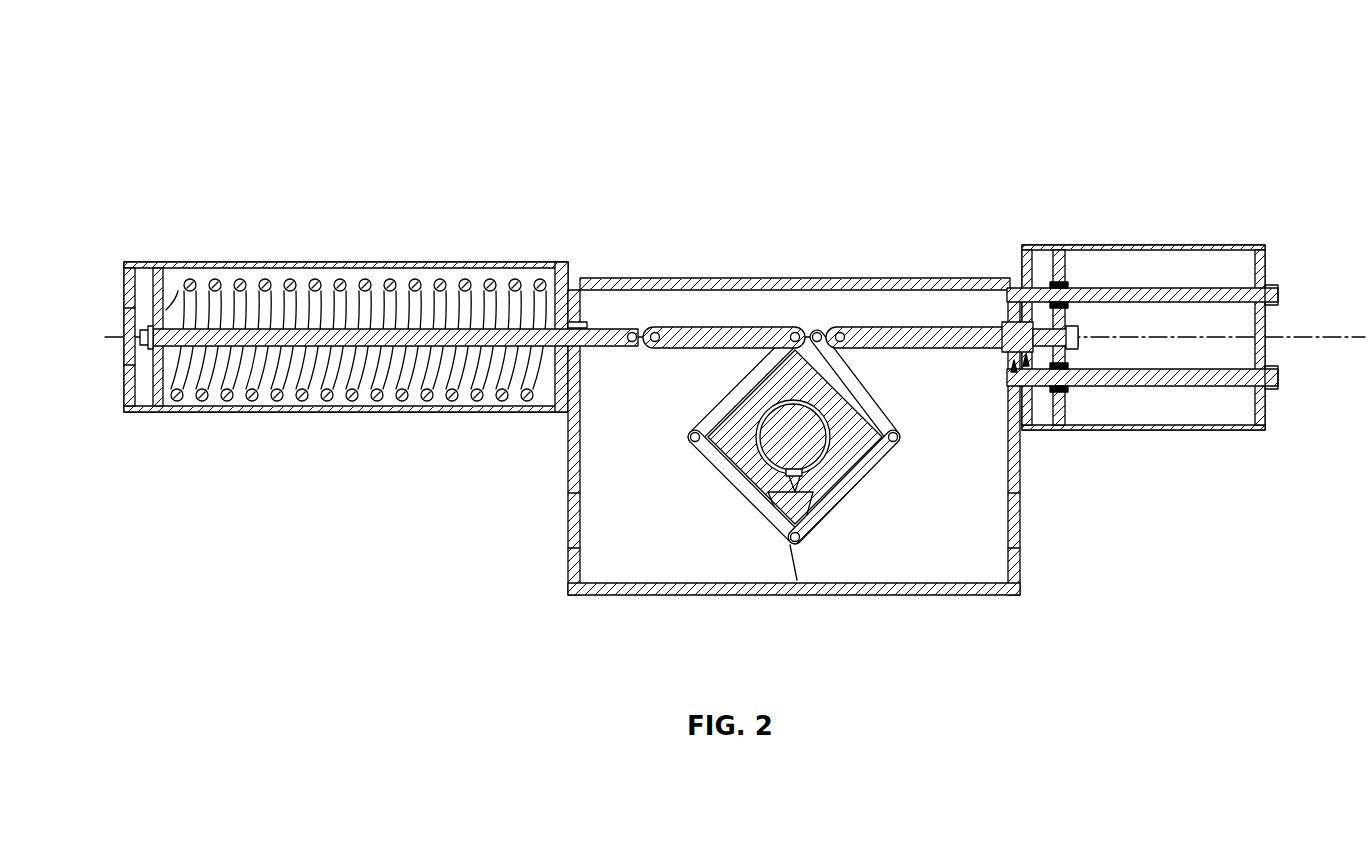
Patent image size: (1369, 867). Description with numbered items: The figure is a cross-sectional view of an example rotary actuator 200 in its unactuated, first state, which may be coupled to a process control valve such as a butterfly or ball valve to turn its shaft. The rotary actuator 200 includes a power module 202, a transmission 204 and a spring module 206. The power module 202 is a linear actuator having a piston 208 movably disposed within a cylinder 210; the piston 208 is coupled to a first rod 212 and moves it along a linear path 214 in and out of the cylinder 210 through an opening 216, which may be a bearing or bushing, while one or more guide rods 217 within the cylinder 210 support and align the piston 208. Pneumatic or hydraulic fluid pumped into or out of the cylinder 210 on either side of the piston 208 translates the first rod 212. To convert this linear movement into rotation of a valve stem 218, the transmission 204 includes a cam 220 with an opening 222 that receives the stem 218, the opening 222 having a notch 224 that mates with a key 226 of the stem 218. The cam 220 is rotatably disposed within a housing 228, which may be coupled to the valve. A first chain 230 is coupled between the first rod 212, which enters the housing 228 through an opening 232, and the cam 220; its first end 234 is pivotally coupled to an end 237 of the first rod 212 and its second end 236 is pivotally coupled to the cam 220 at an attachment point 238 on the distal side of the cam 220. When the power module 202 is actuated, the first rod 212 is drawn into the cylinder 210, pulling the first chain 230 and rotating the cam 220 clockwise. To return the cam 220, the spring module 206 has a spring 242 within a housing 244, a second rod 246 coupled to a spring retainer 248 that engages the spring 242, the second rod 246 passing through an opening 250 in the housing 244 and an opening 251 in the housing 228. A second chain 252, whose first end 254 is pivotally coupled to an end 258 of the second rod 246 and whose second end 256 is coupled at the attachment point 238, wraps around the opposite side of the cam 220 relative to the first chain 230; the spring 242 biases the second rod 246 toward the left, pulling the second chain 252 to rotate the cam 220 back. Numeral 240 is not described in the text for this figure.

The rotary actuator 200 is at (133, 85).
The power module 202 is at (1181, 335).
The transmission 204 is at (751, 399).
The spring module 206 is at (344, 337).
The piston 208 is at (1060, 250).
The cylinder 210 is at (1183, 430).
The first rod 212 is at (612, 346).
The path 214 is at (1307, 342).
The opening 216 is at (1052, 390).
The guide rods 217 is at (1237, 288).
The stem 218 is at (720, 472).
The cam 220 is at (690, 436).
The opening 222 is at (845, 452).
The notch 224 is at (770, 495).
The key 226 is at (808, 522).
The housing 228 is at (575, 450).
The first chain 230 is at (722, 415).
The opening 232 is at (1022, 372).
The first end 234 is at (842, 330).
The second end 236 is at (770, 525).
The end 237 is at (864, 330).
The attachment point 238 is at (802, 542).
The upper right arm 240 is at (840, 387).
The spring 242 is at (390, 290).
The housing 244 is at (232, 410).
The second rod 246 is at (460, 320).
The spring retainer 248 is at (158, 264).
The opening 250 is at (560, 308).
The opening 251 is at (579, 318).
The second chain 252 is at (880, 412).
The first end 254 is at (634, 330).
The second end 256 is at (797, 580).
The end 258 is at (660, 333).